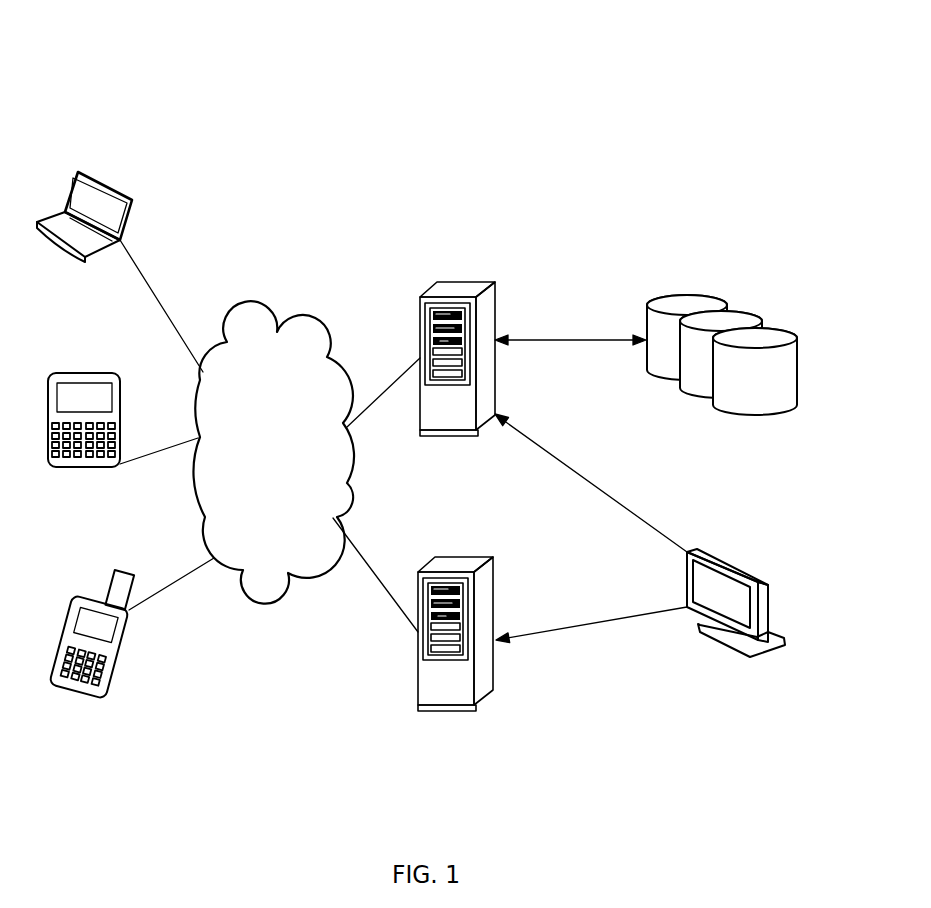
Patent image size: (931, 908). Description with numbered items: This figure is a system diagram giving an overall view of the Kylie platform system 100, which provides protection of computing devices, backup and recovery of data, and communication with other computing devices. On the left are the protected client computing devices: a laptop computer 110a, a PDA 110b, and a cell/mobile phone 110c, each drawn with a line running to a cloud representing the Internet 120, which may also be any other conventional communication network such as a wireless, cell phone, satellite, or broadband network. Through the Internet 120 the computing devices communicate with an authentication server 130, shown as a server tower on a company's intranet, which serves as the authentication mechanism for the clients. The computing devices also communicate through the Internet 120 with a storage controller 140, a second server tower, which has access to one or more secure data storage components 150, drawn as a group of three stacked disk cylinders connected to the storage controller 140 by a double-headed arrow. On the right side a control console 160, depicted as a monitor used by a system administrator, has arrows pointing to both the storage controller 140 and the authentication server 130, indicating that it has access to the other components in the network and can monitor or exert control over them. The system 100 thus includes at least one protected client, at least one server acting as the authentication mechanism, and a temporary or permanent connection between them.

The Kylie platform system 100 is at (521, 49).
The laptop computer 110a is at (99, 181).
The PDA 110b is at (99, 371).
The cell/mobile phone 110c is at (126, 567).
The Internet 120 is at (253, 300).
The authentication server 130 is at (495, 556).
The storage controller 140 is at (496, 300).
The secure data storage components 150 is at (753, 313).
The control console 160 is at (707, 549).